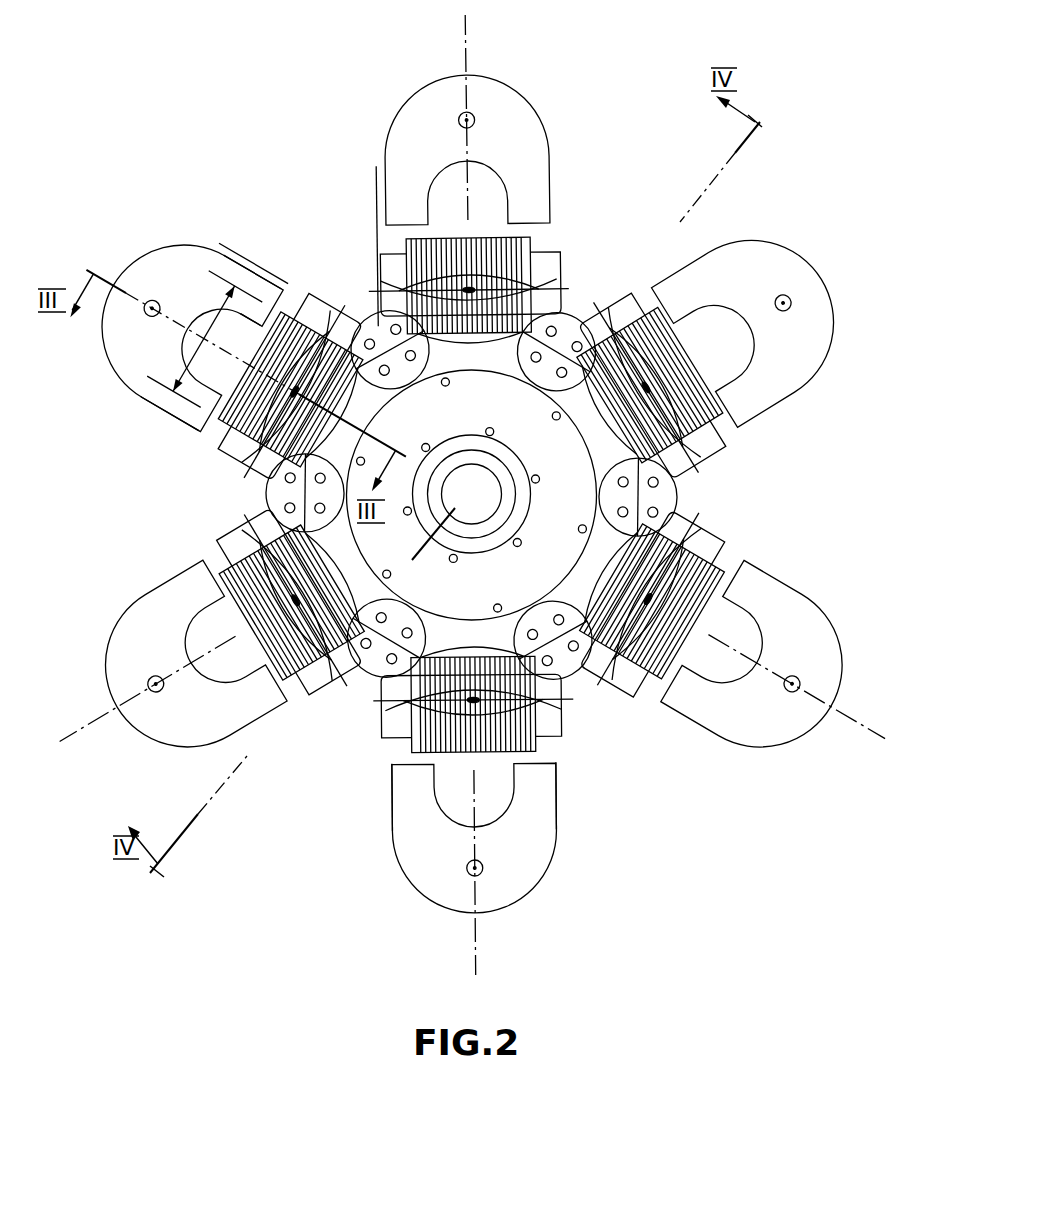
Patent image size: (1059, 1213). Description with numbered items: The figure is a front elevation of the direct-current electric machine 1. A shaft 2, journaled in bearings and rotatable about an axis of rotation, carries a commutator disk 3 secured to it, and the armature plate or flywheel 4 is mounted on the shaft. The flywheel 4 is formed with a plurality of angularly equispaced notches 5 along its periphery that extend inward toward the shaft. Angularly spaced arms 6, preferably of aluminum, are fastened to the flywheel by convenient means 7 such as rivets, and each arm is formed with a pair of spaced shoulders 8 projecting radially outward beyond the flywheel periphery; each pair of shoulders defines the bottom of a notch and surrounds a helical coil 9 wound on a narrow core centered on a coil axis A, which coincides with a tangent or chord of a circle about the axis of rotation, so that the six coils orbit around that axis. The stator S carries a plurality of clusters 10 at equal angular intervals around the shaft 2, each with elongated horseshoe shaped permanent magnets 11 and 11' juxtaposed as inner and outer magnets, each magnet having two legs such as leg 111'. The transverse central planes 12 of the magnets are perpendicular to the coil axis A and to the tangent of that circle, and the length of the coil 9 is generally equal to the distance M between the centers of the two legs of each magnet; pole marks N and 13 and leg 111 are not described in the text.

The direct-current electric machine 1 is at (474, 492).
The shaft 2 is at (484, 508).
The commutator disk 3 is at (481, 409).
The flywheel 4 is at (672, 468).
The notch 5 is at (380, 199).
The arm 6 is at (566, 310).
The fastening means 7 is at (590, 326).
The shoulder 8 is at (366, 291).
The helical coil 9 is at (528, 243).
The cluster 10 is at (565, 160).
The horseshoe shaped permanent magnet 11 is at (177, 323).
The horseshoe shaped permanent magnet 11' is at (195, 446).
The transverse central plane 12 is at (470, 38).
The shaft bore 13 is at (477, 497).
The magnet arm 111 is at (361, 820).
The magnet leg 111' is at (593, 819).
The coil axis A is at (372, 290).
The distance between magnet leg centers M is at (205, 353).
The north pole N is at (219, 354).
The stator S is at (224, 348).